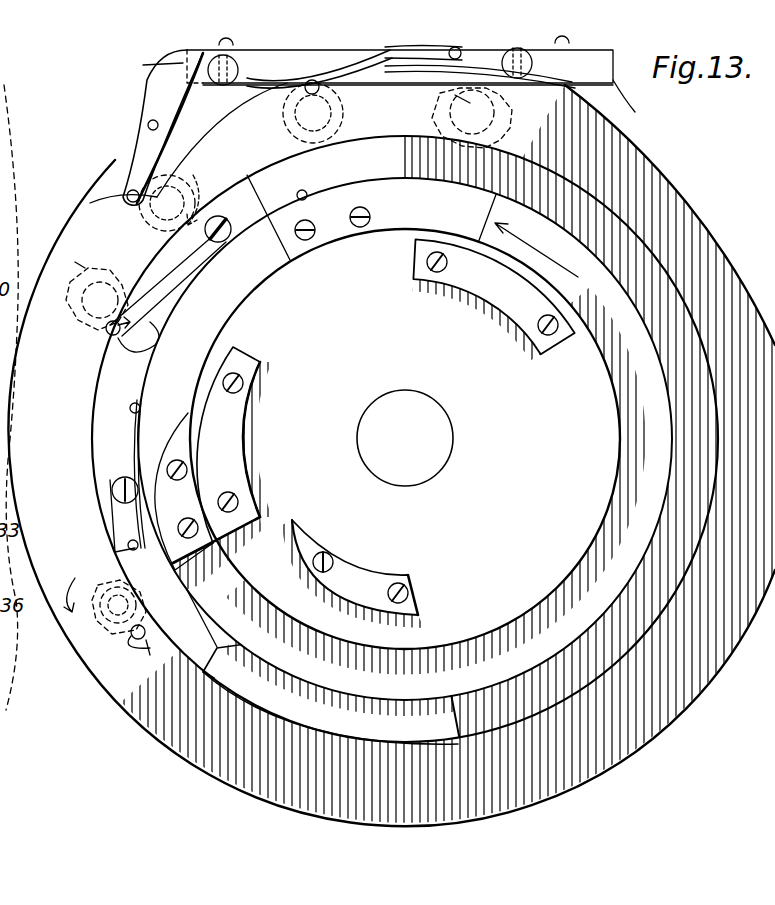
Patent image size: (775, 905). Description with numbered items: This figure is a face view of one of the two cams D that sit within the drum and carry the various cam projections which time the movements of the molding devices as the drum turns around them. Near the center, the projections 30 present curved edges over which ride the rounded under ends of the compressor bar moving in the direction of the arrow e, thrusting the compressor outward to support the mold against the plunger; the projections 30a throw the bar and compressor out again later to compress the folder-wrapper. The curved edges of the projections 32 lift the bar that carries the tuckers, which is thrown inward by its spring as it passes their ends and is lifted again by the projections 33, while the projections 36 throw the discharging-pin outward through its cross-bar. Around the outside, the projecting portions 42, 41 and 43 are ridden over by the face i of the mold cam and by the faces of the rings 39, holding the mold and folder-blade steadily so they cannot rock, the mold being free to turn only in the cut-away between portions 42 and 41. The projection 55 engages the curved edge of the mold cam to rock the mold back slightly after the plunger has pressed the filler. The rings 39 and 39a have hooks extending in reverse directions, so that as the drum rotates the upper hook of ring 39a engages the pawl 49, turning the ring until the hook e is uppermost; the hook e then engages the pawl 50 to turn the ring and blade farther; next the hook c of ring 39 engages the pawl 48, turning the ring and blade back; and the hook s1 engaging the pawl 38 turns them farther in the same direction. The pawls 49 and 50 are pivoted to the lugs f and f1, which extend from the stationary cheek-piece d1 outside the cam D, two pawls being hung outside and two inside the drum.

The projections 30 is at (494, 299).
The projections 30a is at (222, 468).
The projections 32 is at (395, 219).
The projections 33 is at (184, 491).
The projections 36 is at (353, 574).
The pawl 38 is at (142, 548).
The rings 39 is at (343, 112).
The ring 39a is at (190, 180).
The projecting portion 41 is at (114, 477).
The projecting portion 42 is at (281, 206).
The projecting portion 43 is at (214, 665).
The pawl 48 is at (172, 293).
The pawl 49 is at (449, 92).
The pawl 50 is at (150, 127).
The projection 55 is at (405, 439).
The cam D is at (391, 455).
The hook c is at (196, 365).
The hook e is at (366, 208).
The lug f is at (416, 75).
The lug f1 is at (351, 82).
The cheek-piece d1 is at (147, 61).
The face i is at (209, 208).
The hook s1 is at (108, 457).